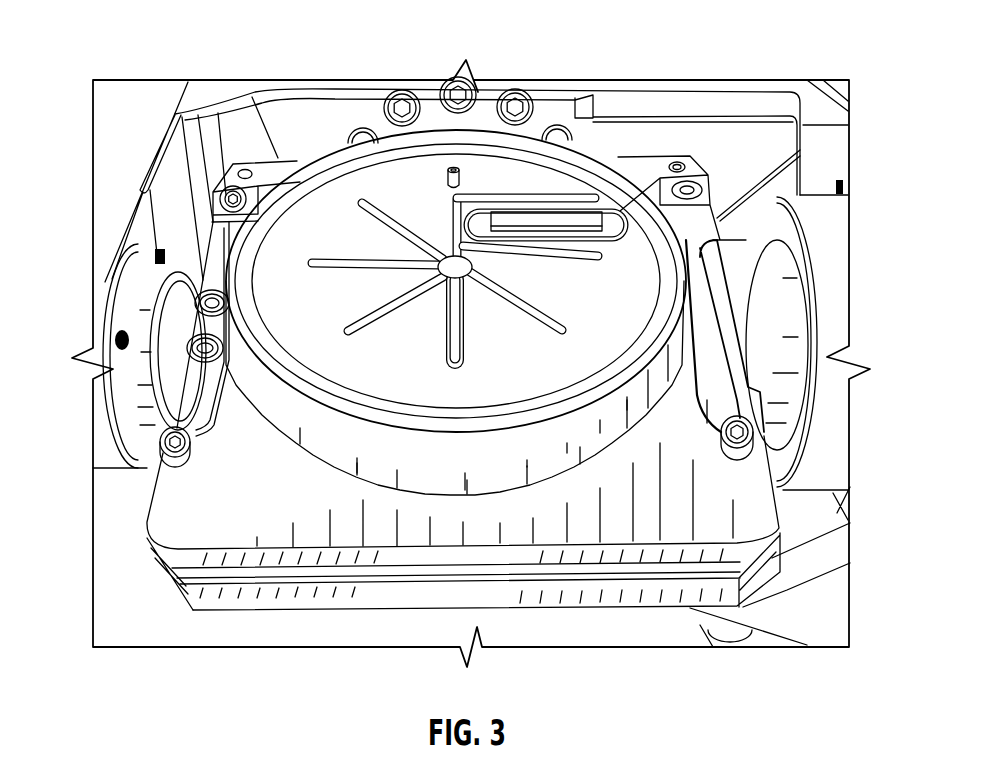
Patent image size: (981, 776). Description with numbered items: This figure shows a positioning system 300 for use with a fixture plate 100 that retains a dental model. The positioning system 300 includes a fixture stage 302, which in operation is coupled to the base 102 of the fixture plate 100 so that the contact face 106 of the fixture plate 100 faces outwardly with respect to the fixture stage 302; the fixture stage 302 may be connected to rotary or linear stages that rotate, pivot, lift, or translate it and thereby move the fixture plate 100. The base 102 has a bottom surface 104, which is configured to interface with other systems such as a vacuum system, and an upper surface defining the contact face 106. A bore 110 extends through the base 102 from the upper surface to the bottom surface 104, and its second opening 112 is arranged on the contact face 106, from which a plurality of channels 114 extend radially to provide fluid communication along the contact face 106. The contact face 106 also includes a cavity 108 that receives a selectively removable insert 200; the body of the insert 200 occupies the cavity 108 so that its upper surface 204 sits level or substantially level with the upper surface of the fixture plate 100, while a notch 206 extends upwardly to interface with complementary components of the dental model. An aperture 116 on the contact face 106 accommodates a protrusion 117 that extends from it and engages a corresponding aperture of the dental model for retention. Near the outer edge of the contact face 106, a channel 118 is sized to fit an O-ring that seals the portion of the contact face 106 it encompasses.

The positioning system 300 is at (150, 40).
The fixture plate 100 is at (160, 592).
The base 102 is at (617, 522).
The bottom surface 104 is at (320, 622).
The contact face 106 is at (507, 168).
The cavity 108 is at (620, 168).
The bore 110 is at (368, 308).
The second opening 112 is at (453, 282).
The plurality of channels 114 is at (375, 217).
The aperture 116 is at (448, 188).
The protrusion 117 is at (455, 166).
The channel 118 is at (257, 296).
The insert 200 is at (598, 200).
The upper surface 204 is at (697, 163).
The notch 206 is at (577, 226).
The fixture stage 302 is at (840, 255).